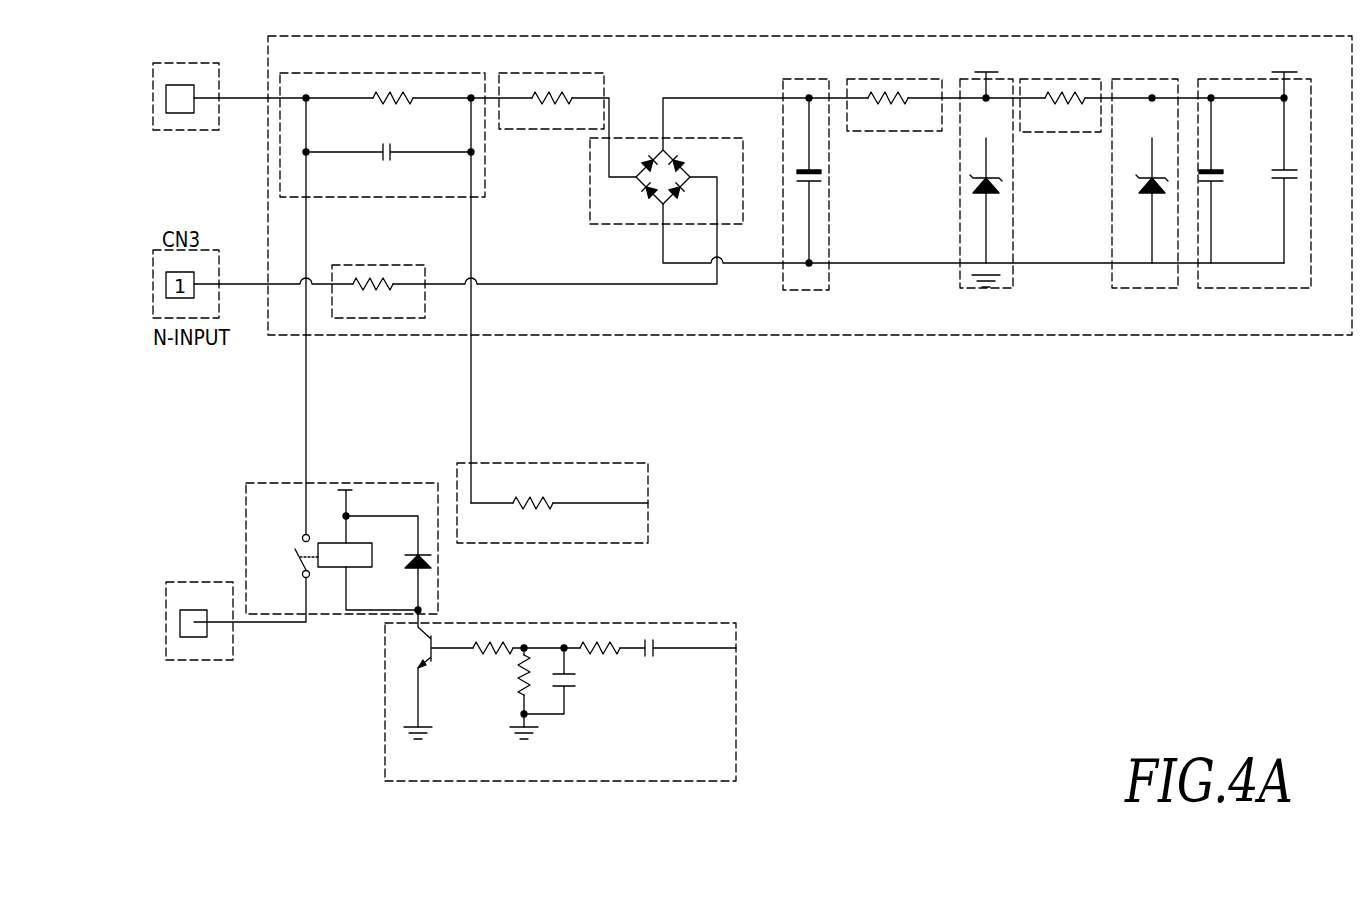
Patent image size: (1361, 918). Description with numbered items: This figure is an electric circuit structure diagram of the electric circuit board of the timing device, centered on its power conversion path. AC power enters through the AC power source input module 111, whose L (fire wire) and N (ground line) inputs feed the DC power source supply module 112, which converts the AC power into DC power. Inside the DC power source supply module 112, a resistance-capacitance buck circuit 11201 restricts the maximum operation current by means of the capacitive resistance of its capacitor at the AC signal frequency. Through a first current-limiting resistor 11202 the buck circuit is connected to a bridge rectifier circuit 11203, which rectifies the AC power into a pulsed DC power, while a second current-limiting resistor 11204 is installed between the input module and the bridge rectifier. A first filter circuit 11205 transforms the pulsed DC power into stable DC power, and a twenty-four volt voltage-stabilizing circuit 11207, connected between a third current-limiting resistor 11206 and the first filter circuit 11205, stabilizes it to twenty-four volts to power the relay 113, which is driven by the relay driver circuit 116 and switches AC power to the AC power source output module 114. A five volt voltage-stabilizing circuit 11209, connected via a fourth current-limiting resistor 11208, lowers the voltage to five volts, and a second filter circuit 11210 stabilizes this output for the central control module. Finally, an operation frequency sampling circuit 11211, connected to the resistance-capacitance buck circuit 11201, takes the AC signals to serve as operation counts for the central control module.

The AC power source input module 111 is at (153, 106).
The DC power source supply module 112 is at (870, 336).
The relay 113 is at (264, 483).
The AC power source output module 114 is at (166, 630).
The relay driver circuit 116 is at (690, 623).
The resistance-capacitance buck circuit 11201 is at (373, 73).
The first current-limiting resistor 11202 is at (545, 73).
The bridge rectifier circuit 11203 is at (692, 138).
The second current-limiting resistor 11204 is at (373, 265).
The first filter circuit 11205 is at (797, 79).
The third current-limiting resistor 11206 is at (877, 132).
The 24V voltage-stabilizing circuit 11207 is at (985, 289).
The fourth current-limiting resistor 11208 is at (1068, 79).
The 5V voltage-stabilizing circuit 11209 is at (1135, 289).
The second filter circuit 11210 is at (1270, 289).
The operation frequency sampling circuit 11211 is at (600, 463).